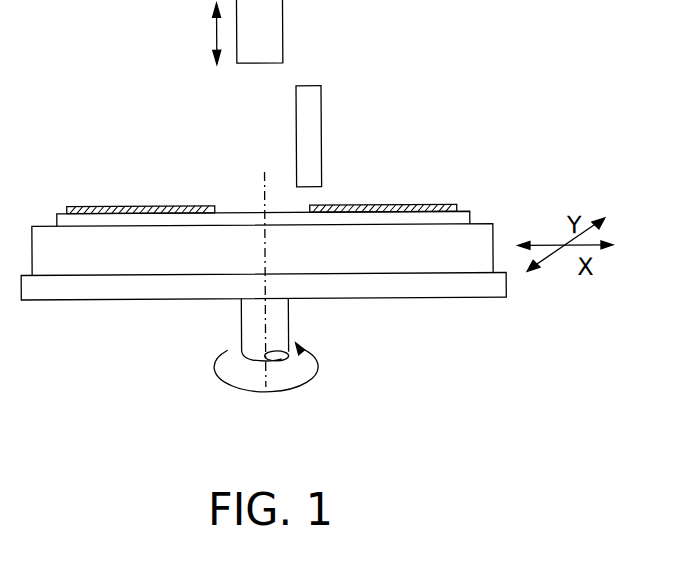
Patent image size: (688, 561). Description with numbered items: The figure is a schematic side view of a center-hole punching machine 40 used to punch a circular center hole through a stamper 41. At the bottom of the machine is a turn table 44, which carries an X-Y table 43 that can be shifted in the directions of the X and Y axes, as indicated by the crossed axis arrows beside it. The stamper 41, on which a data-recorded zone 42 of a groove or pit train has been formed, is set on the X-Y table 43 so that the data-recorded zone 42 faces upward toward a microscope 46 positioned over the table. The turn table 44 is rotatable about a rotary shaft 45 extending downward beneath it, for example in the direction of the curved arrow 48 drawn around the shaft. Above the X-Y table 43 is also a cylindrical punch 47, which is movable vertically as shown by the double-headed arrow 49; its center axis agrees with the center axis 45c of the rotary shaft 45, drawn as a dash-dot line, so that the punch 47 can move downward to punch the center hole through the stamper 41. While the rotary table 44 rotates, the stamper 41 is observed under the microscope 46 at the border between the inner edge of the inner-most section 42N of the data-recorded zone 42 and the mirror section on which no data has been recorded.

The center-hole punching machine 40 is at (515, 46).
The stamper 41 is at (473, 216).
The data-recorded zone 42 is at (435, 204).
The inner-most section of the data-recorded zone 42N is at (308, 206).
The X-Y table 43 is at (485, 243).
The turn table 44 is at (506, 285).
The rotary shaft 45 is at (290, 318).
The center axis of the rotary shaft 45c is at (241, 321).
The microscope 46 is at (310, 99).
The cylindrical punch 47 is at (284, 28).
The arrow 48 is at (270, 393).
The vertical movement direction 49 is at (217, 33).